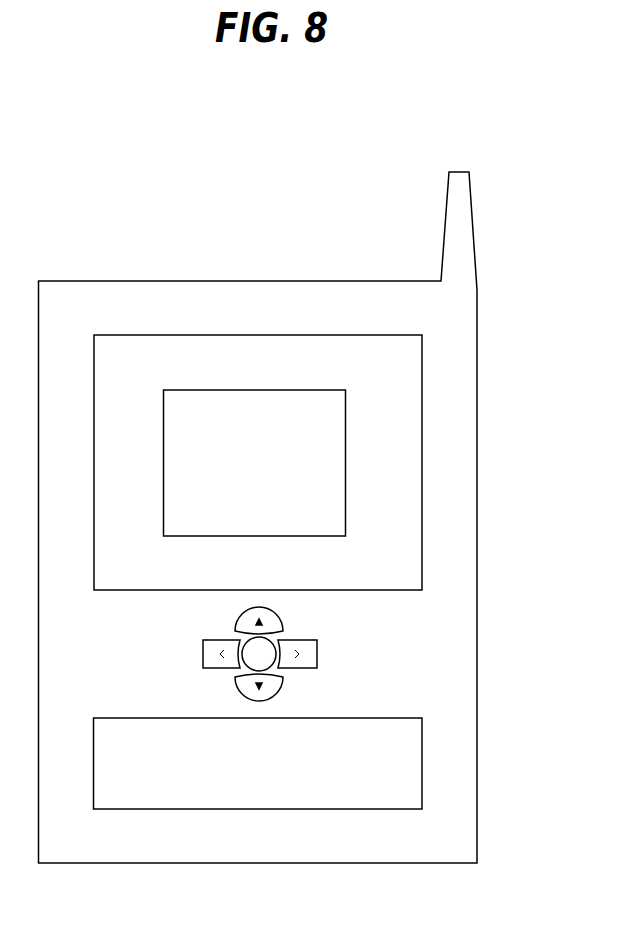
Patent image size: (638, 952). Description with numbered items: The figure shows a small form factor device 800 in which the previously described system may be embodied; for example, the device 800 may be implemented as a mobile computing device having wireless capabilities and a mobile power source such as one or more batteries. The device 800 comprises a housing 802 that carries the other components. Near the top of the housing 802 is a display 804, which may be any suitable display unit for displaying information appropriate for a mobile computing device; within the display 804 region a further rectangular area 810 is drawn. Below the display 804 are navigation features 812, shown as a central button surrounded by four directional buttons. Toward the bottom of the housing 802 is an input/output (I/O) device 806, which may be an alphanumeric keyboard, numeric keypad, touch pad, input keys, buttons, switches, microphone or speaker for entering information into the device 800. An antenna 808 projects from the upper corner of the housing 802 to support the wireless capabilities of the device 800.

The small form factor device 800 is at (296, 113).
The housing 802 is at (477, 605).
The display 804 is at (422, 396).
The input/output (I/O) device 806 is at (422, 768).
The antenna 808 is at (469, 213).
The display window 810 is at (162, 478).
The navigation features 812 is at (323, 640).